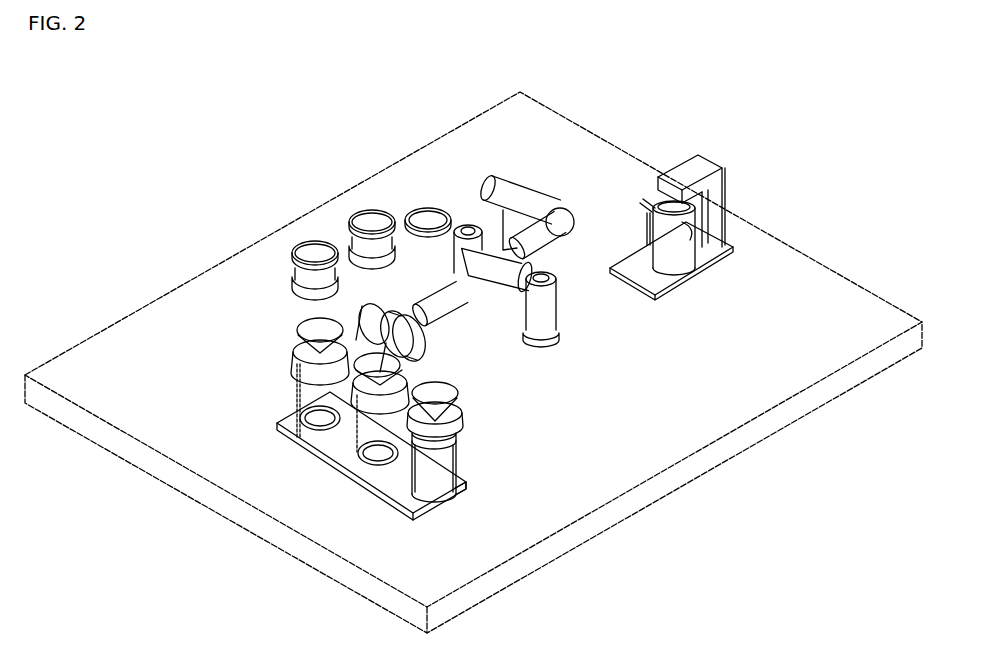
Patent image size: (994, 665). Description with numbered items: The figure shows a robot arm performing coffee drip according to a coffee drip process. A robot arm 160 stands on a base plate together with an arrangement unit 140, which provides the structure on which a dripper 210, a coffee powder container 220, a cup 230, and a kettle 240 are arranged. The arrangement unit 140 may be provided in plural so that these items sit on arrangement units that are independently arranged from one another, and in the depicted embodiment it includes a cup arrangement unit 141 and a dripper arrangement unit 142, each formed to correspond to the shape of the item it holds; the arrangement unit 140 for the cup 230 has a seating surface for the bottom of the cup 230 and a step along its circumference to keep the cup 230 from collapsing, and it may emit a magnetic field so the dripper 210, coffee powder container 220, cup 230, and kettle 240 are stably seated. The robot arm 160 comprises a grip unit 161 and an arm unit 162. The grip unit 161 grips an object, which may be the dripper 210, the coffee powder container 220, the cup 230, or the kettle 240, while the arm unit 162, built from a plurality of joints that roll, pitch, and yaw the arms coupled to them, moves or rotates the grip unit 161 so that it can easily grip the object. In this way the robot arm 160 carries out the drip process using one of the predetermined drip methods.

The arrangement unit 140 is at (428, 208).
The cup arrangement unit 141 is at (468, 481).
The dripper arrangement unit 142 is at (465, 420).
The robot arm 160 is at (492, 170).
The grip unit 161 is at (375, 348).
The arm unit 162 is at (460, 315).
The dripper 210 is at (457, 399).
The coffee powder container 220 is at (354, 211).
The cup 230 is at (427, 492).
The kettle 240 is at (697, 268).